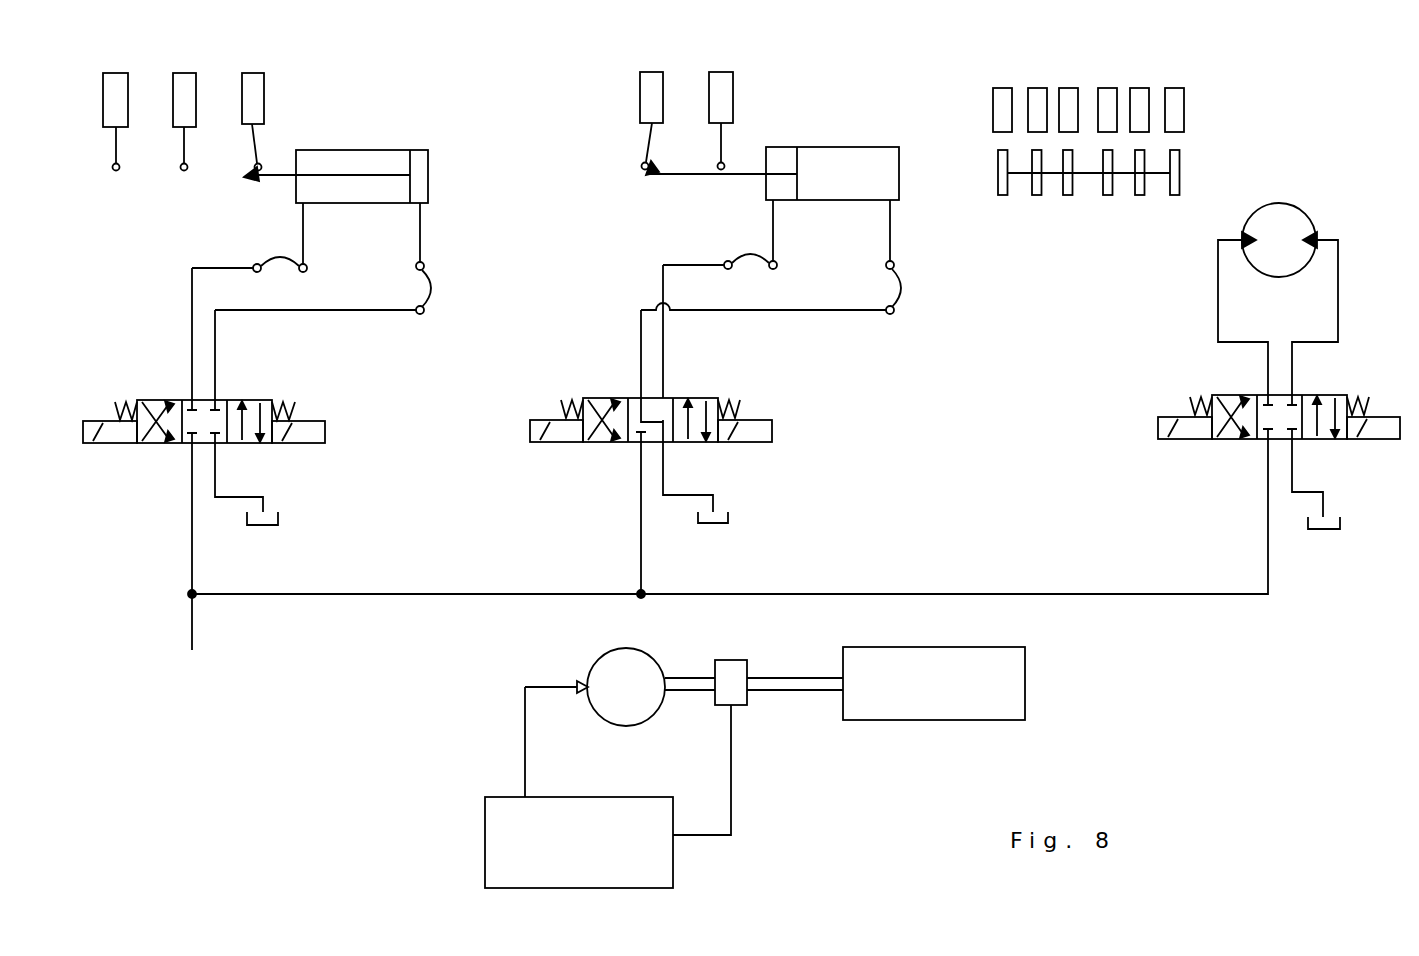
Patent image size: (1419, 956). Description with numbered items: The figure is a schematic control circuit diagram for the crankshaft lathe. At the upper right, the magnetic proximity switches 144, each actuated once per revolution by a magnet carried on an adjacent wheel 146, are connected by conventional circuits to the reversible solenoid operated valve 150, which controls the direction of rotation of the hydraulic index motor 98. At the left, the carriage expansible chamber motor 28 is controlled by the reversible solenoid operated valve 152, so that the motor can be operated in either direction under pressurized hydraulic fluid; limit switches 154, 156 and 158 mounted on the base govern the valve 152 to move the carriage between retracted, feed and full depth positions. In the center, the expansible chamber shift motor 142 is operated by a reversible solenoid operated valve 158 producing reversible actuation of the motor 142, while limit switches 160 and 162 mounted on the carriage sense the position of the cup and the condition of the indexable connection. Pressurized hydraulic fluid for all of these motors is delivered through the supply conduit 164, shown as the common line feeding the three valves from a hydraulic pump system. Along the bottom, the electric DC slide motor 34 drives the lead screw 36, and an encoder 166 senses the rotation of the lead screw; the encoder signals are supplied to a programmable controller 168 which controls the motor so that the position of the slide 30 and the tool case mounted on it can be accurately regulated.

The reversible expansible chamber motor 28 is at (395, 150).
The slide 30 is at (965, 720).
The electric slide motor 34 is at (596, 660).
The slide lead screw 36 is at (687, 692).
The hydraulic index motor 98 is at (1305, 205).
The hydraulic expansible chamber motor 142 is at (830, 147).
The magnetic proximity switches 144 is at (1068, 88).
The wheel 146 is at (1107, 195).
The reversible solenoid operated valve 150 is at (1327, 395).
The reversible solenoid operated valve 152 is at (252, 400).
The limit switch 154 is at (262, 73).
The limit switch 156 is at (184, 73).
The limit switch / reversible solenoid operated valve 158 is at (115, 73).
The limit switch 160 is at (645, 72).
The limit switch 162 is at (720, 72).
The supply conduit 164 is at (196, 632).
The encoder 166 is at (731, 662).
The programmable controller 168 is at (665, 888).